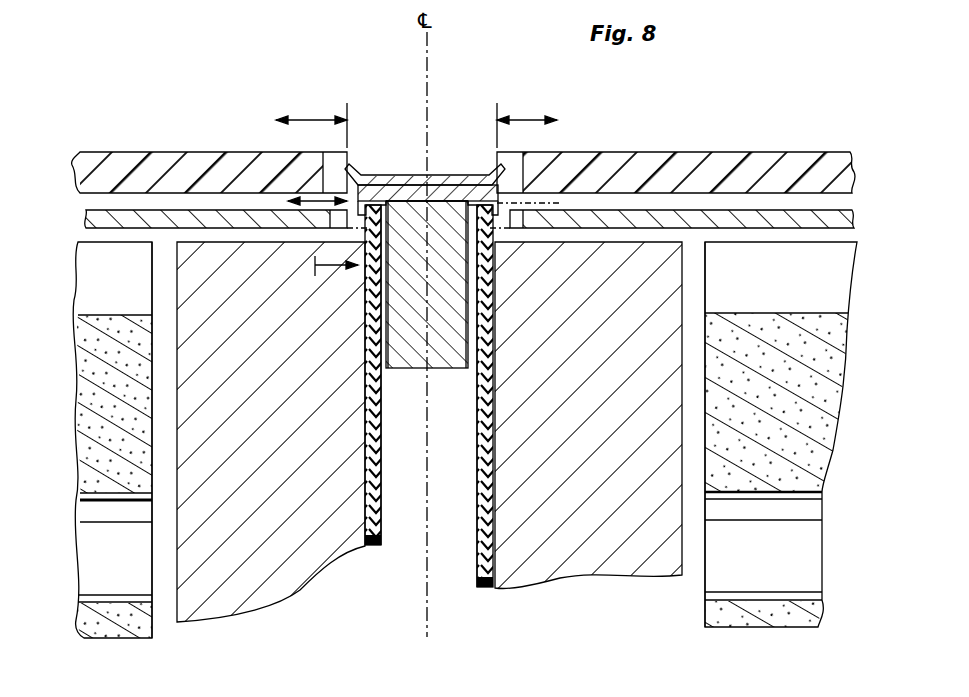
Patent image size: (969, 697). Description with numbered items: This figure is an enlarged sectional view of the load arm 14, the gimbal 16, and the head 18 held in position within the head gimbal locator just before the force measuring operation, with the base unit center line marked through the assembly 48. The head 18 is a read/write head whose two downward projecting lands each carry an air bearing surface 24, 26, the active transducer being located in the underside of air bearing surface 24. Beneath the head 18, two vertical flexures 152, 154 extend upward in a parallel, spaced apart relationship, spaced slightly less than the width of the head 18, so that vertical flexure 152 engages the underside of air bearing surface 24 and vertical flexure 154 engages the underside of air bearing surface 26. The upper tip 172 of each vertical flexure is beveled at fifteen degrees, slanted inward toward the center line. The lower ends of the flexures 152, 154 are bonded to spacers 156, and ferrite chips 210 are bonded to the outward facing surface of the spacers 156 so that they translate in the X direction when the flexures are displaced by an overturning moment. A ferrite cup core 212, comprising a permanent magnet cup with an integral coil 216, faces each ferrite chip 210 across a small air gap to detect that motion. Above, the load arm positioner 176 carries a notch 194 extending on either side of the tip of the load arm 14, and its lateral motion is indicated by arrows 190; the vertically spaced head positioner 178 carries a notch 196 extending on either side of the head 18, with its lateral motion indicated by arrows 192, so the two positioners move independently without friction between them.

The load arm 14 is at (433, 173).
The seal block 16 is at (425, 175).
The head 18 is at (405, 178).
The air bearing surface 24 is at (405, 193).
The air bearing surface 26 is at (478, 195).
The side wall 48 is at (467, 330).
The vertical flexure 152 is at (375, 545).
The vertical flexure 154 is at (487, 588).
The spacer 156 is at (477, 433).
The upper tip 172 is at (420, 358).
The load arm positioner 176 is at (162, 167).
The head positioner 178 is at (128, 217).
The arrows 190 is at (333, 118).
The arrows 192 is at (372, 378).
The notch 194 is at (349, 163).
The notch 196 is at (350, 203).
The ferrite chip 210 is at (268, 572).
The ferrite cup core 212 is at (152, 638).
The coil 216 is at (100, 300).